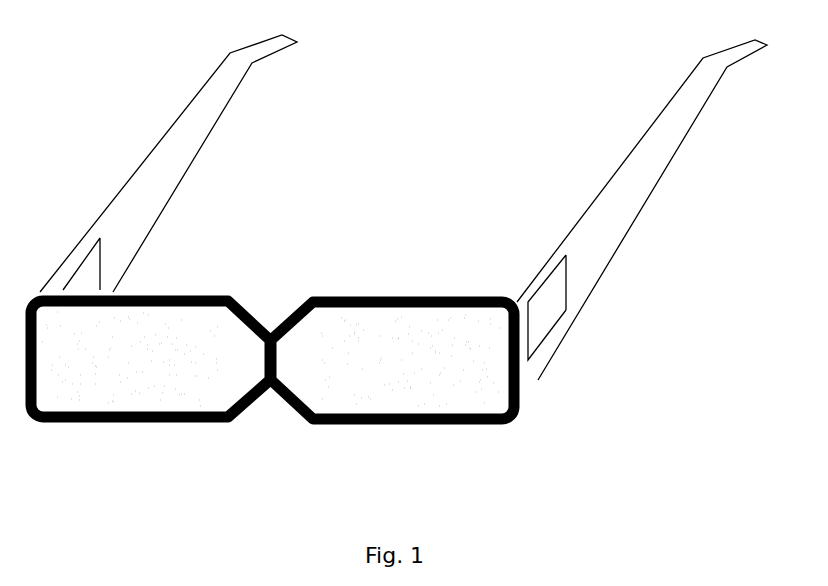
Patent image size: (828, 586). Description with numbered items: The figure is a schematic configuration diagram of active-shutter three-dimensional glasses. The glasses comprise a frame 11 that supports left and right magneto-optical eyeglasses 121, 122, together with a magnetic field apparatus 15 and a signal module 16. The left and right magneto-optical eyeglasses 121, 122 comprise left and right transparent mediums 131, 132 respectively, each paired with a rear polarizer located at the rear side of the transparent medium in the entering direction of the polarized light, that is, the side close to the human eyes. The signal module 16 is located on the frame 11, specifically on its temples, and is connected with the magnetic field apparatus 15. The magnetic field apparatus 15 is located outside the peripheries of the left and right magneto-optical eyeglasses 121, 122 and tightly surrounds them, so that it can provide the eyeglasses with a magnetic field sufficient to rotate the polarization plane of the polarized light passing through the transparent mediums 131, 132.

The frame 11 is at (637, 140).
The magnetic field apparatus 15 is at (272, 368).
The signal module 16 is at (90, 270).
The left magneto-optical eyeglass 121 is at (167, 441).
The right magneto-optical eyeglass 122 is at (425, 435).
The left transparent medium 131 is at (90, 382).
The right transparent medium 132 is at (458, 393).